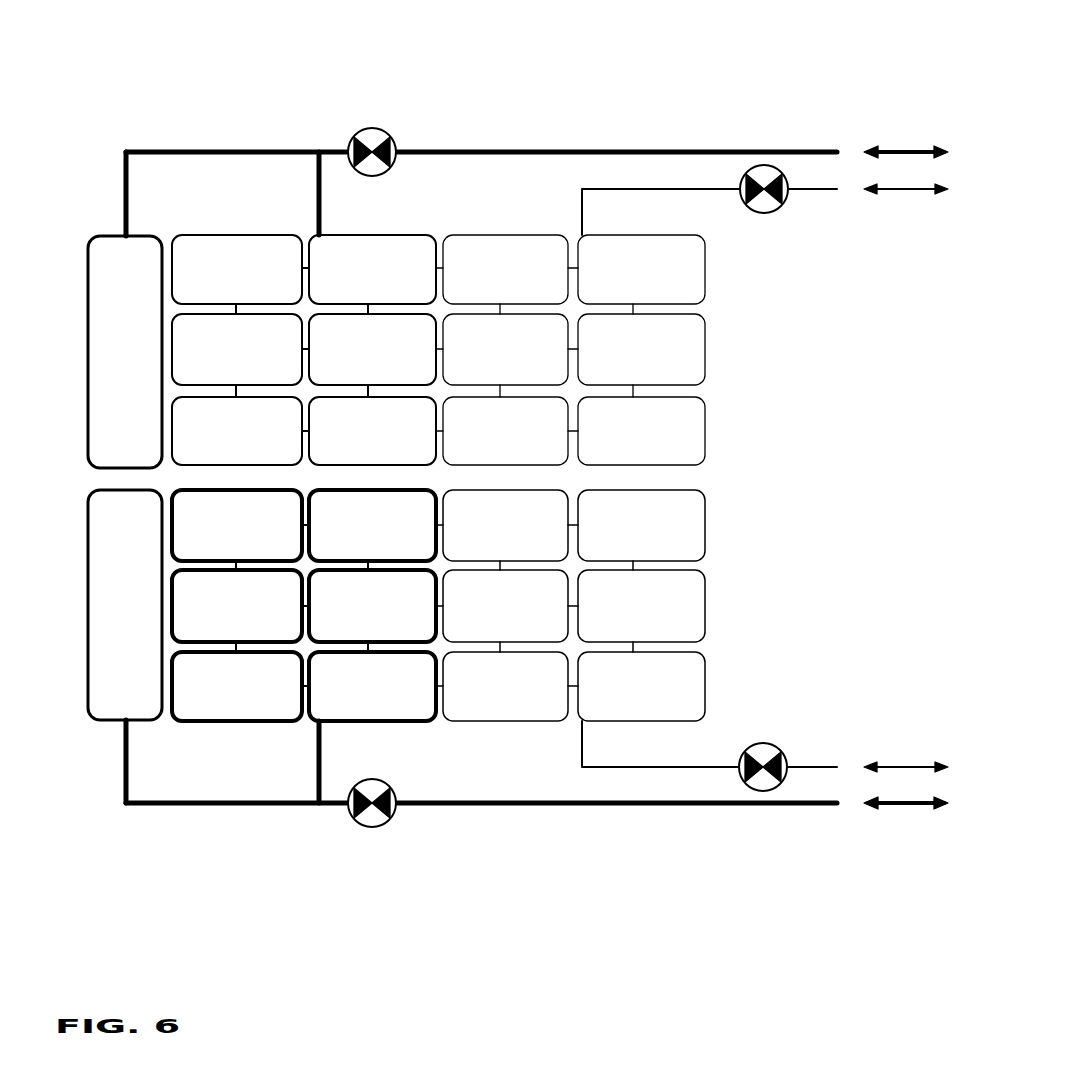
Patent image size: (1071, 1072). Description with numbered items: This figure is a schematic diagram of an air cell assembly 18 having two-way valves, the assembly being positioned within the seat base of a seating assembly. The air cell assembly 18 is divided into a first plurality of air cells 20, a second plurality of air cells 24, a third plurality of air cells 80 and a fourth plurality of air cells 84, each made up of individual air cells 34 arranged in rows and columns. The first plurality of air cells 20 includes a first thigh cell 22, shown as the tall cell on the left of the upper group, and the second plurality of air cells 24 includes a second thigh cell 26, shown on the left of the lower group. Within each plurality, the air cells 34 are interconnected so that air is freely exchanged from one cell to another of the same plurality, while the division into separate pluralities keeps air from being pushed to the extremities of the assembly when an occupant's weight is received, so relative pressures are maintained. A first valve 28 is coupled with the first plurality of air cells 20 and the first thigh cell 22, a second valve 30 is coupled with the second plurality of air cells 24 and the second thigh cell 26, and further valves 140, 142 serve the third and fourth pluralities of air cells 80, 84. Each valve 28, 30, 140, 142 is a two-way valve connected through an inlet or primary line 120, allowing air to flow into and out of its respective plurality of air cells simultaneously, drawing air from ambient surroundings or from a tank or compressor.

The air cell assembly 18 is at (88, 122).
The first plurality of air cells 20 is at (247, 216).
The first thigh cell 22 is at (122, 312).
The second plurality of air cells 24 is at (251, 738).
The second thigh cell 26 is at (108, 673).
The first valve 28 is at (372, 128).
The second valve 30 is at (372, 828).
The individual air cell 34 is at (416, 476).
The third plurality of air cells 80 is at (547, 212).
The fourth plurality of air cells 84 is at (555, 748).
The inlet line 120 is at (190, 150).
The valve 140 is at (765, 165).
The valve 142 is at (763, 792).